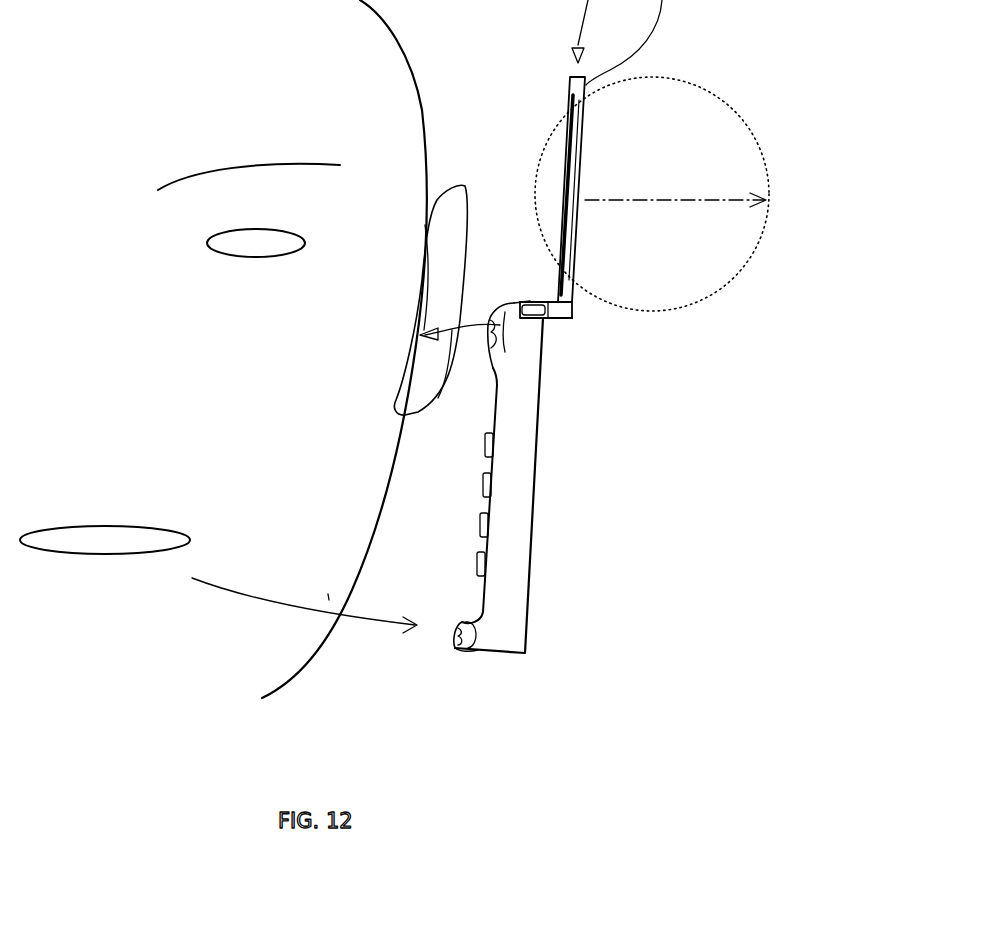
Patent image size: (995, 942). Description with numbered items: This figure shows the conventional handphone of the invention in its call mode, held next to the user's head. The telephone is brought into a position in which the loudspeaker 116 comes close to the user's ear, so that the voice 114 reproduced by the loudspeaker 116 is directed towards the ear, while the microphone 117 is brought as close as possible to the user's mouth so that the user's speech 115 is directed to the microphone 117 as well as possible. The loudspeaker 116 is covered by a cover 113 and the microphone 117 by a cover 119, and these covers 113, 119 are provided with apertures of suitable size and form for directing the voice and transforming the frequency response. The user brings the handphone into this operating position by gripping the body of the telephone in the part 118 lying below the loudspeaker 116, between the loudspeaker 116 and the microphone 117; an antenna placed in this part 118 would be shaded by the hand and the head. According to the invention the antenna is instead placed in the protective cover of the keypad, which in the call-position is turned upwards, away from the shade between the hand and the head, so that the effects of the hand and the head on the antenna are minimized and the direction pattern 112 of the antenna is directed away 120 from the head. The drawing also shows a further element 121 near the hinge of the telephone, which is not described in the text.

The antenna 112 is at (742, 97).
The earpiece 113 is at (482, 318).
The ear 114 is at (430, 310).
The mouth direction arrow 115 is at (262, 598).
The hinge 116 is at (495, 308).
The bottom end 117 is at (478, 648).
The phone body 118 is at (515, 508).
The microphone 119 is at (455, 645).
The antenna extension arrow 120 is at (668, 215).
The clip 121 is at (545, 320).